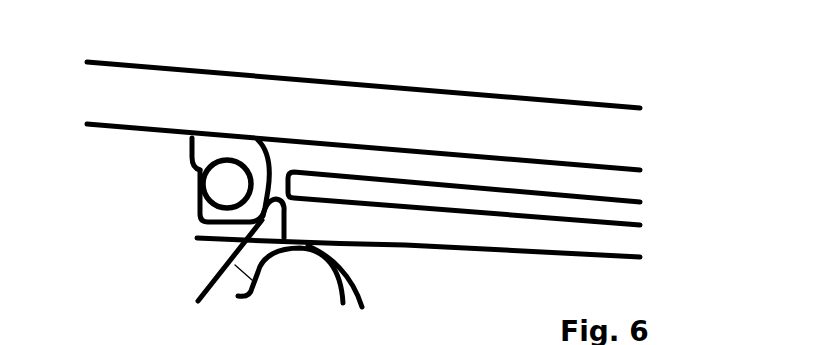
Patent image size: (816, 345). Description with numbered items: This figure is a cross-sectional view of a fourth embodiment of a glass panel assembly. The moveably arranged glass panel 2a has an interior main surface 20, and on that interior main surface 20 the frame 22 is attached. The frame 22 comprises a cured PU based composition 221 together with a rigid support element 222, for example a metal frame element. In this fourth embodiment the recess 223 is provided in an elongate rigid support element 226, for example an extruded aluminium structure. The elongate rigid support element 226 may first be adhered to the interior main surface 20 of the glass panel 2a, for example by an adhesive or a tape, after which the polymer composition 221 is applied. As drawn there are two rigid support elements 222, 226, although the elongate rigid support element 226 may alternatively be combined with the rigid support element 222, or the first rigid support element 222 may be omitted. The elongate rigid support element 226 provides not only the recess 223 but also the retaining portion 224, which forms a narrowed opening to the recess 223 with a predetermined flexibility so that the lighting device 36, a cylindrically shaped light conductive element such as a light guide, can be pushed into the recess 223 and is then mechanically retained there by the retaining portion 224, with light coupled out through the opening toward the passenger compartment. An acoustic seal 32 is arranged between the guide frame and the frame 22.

The glass panel 2a is at (605, 142).
The interior main surface 20 is at (144, 137).
The frame 22 is at (458, 249).
The acoustic seal 32 is at (253, 292).
The lighting device 36 is at (224, 180).
The cured PU based composition 221 is at (315, 160).
The rigid support element 222 is at (377, 192).
The recess 223 is at (181, 183).
The retaining portion 224 is at (190, 163).
The elongate rigid support element 226 is at (223, 150).